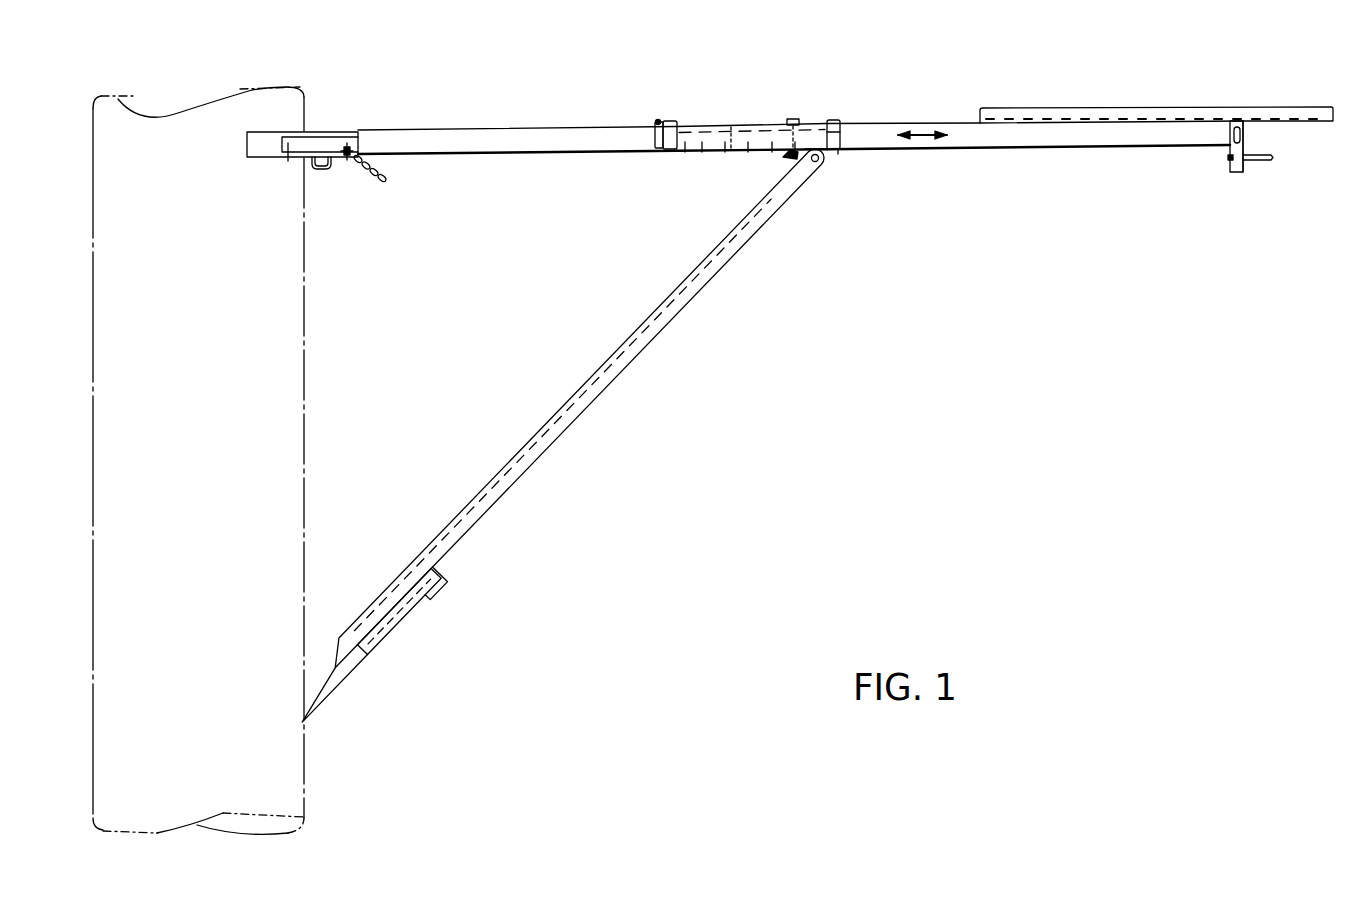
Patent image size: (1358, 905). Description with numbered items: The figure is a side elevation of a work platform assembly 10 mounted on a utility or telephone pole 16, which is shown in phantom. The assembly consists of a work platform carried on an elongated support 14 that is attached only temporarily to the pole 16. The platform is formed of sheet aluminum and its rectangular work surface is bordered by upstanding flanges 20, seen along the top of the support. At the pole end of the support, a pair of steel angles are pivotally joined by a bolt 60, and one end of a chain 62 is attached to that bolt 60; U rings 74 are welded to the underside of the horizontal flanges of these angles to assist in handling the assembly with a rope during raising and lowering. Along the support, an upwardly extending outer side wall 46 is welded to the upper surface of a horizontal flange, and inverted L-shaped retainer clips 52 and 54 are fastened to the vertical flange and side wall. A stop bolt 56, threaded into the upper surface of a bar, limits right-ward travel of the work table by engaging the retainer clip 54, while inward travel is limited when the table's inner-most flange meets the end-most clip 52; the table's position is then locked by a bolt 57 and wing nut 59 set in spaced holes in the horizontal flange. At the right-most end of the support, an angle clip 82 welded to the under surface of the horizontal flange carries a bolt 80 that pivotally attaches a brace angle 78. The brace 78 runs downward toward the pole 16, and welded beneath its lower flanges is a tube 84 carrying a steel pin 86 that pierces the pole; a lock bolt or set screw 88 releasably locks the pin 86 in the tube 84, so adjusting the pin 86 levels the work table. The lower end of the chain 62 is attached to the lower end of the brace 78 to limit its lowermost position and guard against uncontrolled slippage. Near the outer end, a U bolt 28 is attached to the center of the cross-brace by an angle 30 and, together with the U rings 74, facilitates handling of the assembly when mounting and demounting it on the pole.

The work platform assembly 10 is at (472, 343).
The elongated support 14 is at (742, 82).
The utility pole 16 is at (105, 430).
The upstanding flanges 20 is at (983, 108).
The U bolt 28 is at (1262, 160).
The angle 30 is at (1241, 168).
The outer side wall 46 is at (684, 151).
The inverted L-shaped retainer clip 52 is at (839, 120).
The inverted L-shaped retainer clip 54 is at (673, 120).
The stop bolt 56 is at (657, 121).
The bolt 57 is at (795, 118).
The wing nut 59 is at (789, 161).
The bolt 60 is at (348, 159).
The chain 62 is at (388, 176).
The U ring 74 is at (323, 170).
The brace angle 78 is at (590, 393).
The bolt 80 is at (817, 169).
The angle clip 82 is at (829, 154).
The tube 84 is at (426, 598).
The steel pin 86 is at (328, 706).
The set screw 88 is at (400, 632).